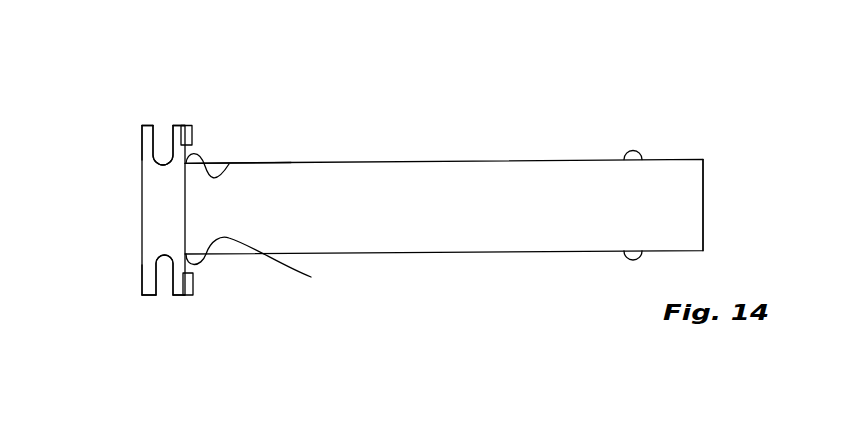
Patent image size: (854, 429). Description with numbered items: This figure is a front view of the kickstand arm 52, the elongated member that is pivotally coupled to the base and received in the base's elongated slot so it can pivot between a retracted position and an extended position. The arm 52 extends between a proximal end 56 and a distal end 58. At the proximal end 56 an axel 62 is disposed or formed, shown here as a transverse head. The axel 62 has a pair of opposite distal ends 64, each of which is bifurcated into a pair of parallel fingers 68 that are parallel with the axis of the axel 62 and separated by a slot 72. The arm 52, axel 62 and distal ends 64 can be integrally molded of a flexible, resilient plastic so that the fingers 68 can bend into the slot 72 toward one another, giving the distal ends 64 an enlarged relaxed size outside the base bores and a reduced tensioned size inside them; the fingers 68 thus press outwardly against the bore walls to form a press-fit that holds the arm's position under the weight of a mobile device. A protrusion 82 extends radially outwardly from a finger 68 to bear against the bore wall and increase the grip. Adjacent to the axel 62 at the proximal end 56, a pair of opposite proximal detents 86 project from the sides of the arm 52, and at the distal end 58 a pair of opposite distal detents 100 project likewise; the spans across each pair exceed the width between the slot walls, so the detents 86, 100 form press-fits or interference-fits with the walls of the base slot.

The arm 52 is at (451, 217).
The proximal end 56 is at (278, 178).
The distal end 58 is at (677, 177).
The axel 62 is at (140, 200).
The distal ends of the axel 64 is at (140, 147).
The fingers 68 is at (145, 125).
The slot 72 is at (157, 129).
The protrusion 82 is at (192, 131).
The proximal detents 86 is at (228, 164).
The distal detents 100 is at (632, 149).